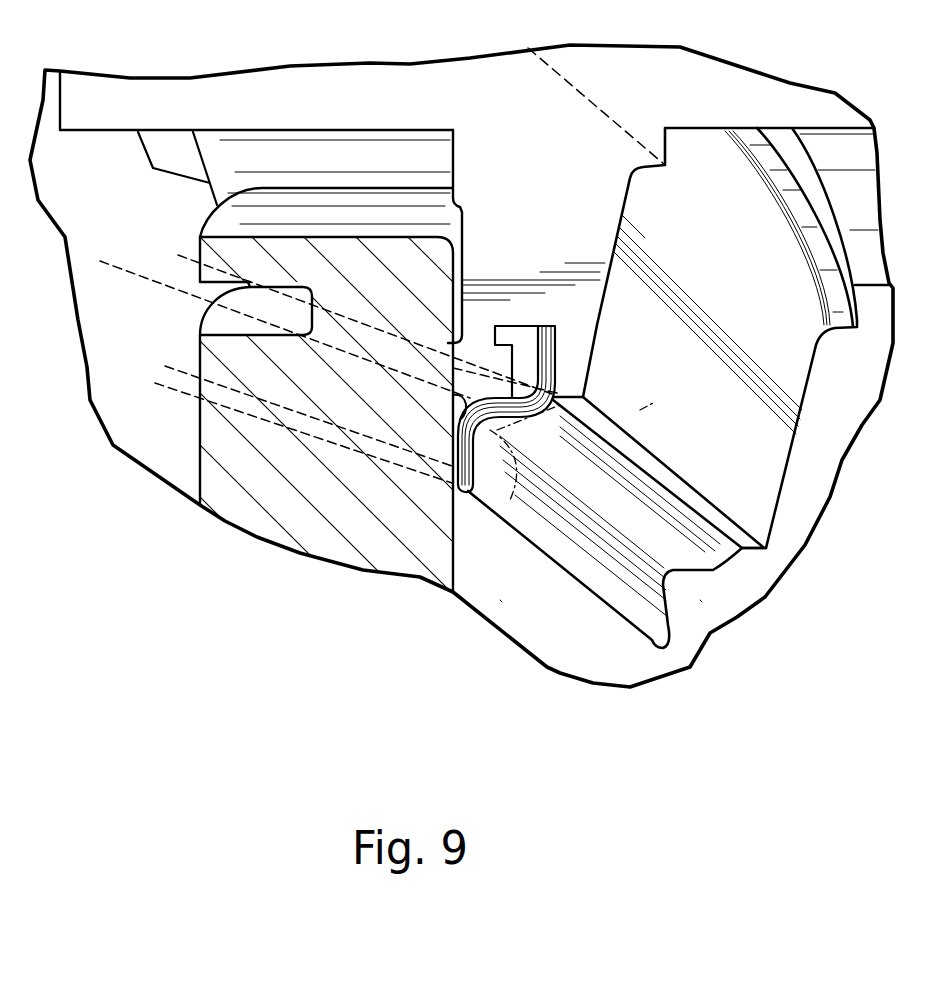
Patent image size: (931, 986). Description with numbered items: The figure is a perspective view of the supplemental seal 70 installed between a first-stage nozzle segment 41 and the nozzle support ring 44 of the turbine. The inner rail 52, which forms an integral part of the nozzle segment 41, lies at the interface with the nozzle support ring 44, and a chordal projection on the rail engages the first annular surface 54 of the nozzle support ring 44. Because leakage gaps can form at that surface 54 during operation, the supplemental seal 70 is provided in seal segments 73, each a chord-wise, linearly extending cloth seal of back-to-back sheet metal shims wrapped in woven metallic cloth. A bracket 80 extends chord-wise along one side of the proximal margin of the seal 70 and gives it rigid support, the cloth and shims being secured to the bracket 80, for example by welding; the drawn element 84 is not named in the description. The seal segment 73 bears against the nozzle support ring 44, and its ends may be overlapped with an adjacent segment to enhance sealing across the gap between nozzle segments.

The nozzle segment 41 is at (707, 77).
The inner rail 52 is at (540, 176).
The nozzle support ring 44 is at (337, 547).
The bracket 80 is at (528, 348).
The spring clip 84 is at (503, 465).
The seal segment 73 is at (606, 558).
The supplemental seal 70 is at (718, 615).
The first annular surface 54 is at (547, 628).